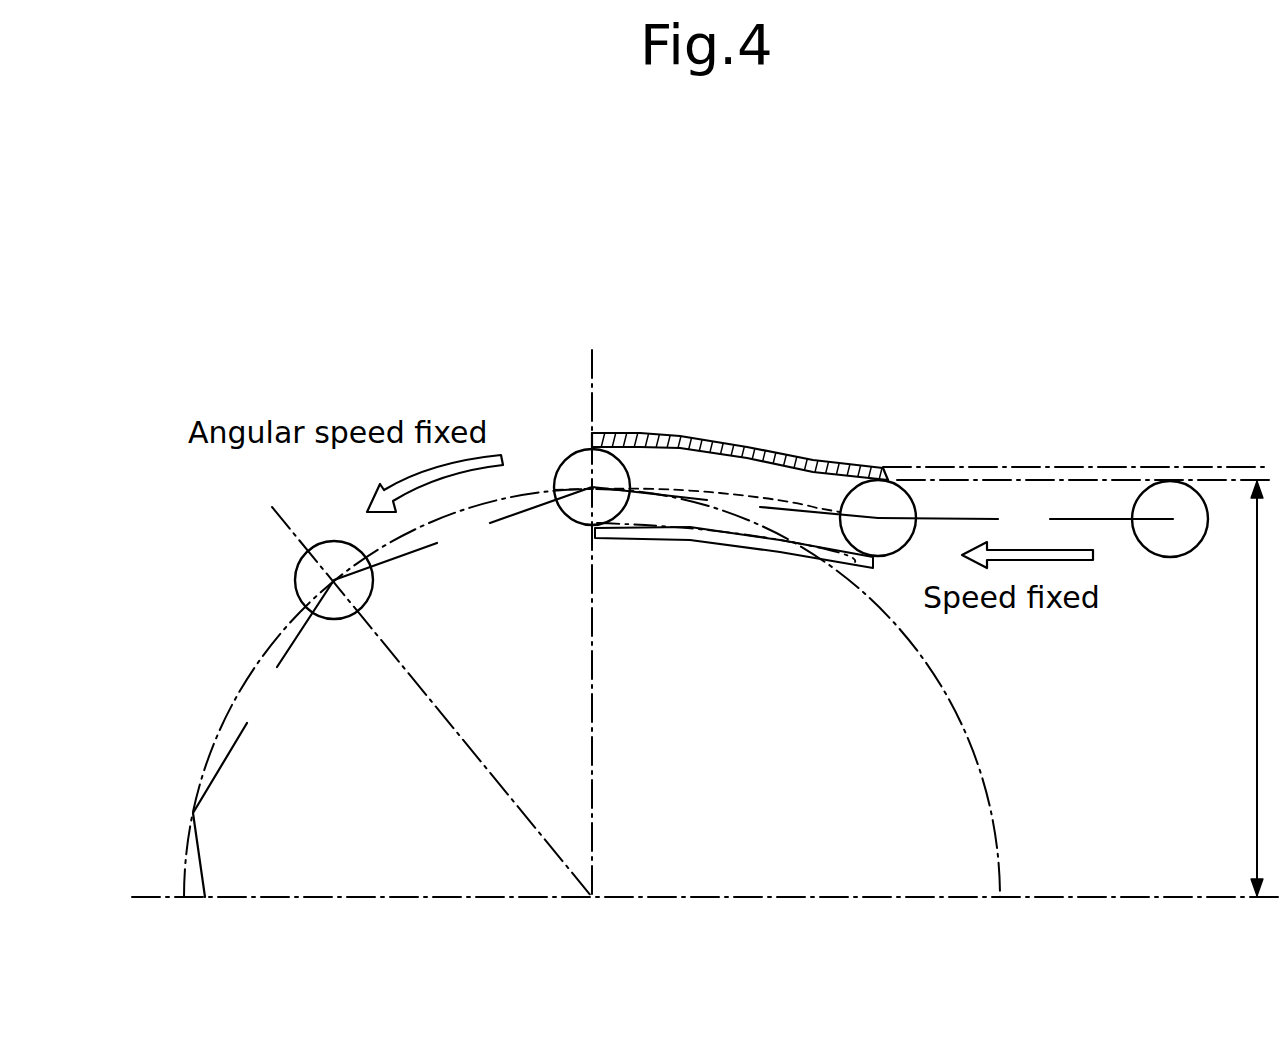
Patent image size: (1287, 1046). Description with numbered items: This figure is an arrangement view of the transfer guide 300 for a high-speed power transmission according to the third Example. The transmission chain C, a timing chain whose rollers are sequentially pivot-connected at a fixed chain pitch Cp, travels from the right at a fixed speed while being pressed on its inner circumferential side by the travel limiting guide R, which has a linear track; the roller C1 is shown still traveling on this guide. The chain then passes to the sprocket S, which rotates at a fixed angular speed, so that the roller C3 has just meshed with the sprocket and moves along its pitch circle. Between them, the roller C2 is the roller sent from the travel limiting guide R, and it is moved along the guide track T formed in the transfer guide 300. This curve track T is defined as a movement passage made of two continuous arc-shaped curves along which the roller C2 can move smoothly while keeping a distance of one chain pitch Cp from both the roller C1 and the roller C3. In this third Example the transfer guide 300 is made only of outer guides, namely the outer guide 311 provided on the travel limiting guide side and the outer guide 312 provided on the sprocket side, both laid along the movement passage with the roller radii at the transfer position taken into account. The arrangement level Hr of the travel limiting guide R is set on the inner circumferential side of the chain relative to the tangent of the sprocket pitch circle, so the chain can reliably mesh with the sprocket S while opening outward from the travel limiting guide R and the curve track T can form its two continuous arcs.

The transfer guide for a high-speed power transmission 300 is at (742, 385).
The outer guide provided on a sprocket S side 312 is at (650, 431).
The outer guide provided on a travel limiting guide R side 311 is at (780, 459).
The roller traveling on the travel limiting guide R C1 is at (1171, 558).
The roller sent from the travel limiting guide R C2 is at (897, 479).
The roller which has just meshed with the sprocket S C3 is at (584, 447).
The transmission chain C is at (958, 519).
The chain pitch Cp is at (617, 692).
The travel limiting guide R is at (1078, 465).
The guide track T is at (807, 495).
The sprocket S is at (687, 853).
The arrangement level of the travel limiting guide R Hr is at (1250, 688).